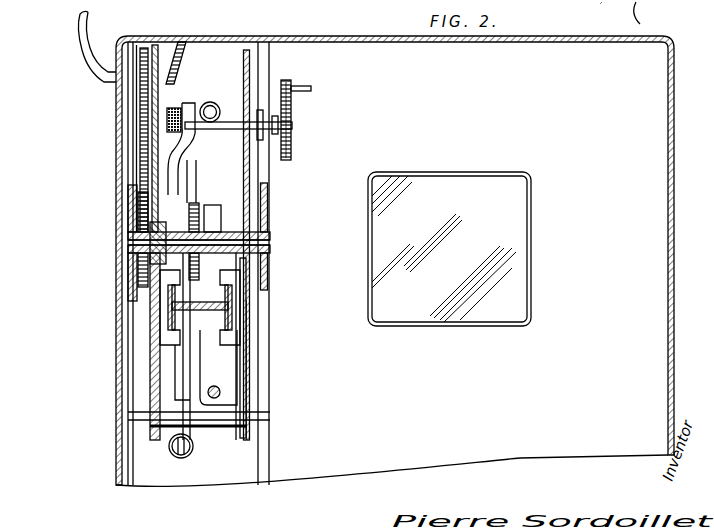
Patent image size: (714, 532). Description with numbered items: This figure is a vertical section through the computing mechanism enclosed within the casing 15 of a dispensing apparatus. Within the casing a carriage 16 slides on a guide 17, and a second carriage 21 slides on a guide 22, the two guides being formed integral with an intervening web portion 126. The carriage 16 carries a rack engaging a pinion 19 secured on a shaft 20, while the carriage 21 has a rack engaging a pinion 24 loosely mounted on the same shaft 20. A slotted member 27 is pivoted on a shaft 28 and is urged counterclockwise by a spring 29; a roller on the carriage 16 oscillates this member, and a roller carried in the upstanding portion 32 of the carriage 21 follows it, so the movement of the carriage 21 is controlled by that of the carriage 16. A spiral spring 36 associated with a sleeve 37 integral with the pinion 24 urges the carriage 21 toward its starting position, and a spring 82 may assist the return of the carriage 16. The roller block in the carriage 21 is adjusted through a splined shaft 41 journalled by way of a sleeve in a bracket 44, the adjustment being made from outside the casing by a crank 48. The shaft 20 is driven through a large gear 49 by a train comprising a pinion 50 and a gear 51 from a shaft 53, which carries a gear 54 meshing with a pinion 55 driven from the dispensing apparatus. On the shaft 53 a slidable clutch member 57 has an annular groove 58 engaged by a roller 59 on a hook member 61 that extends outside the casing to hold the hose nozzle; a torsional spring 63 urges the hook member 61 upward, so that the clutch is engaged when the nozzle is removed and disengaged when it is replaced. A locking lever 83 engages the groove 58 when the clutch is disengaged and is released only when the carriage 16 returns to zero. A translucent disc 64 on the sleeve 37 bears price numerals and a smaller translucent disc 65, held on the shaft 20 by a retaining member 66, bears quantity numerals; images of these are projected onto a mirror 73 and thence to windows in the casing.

The casing 15 is at (381, 44).
The carriage 16 is at (160, 341).
The guide 17 is at (166, 318).
The pinion 19 is at (152, 264).
The shaft 20 is at (118, 247).
The second carriage 21 is at (232, 333).
The guide 22 is at (233, 314).
The pinion 24 is at (246, 272).
The slotted member 27 is at (190, 372).
The shaft 28 is at (142, 420).
The spring 29 is at (170, 456).
The upstanding portion 32 is at (209, 218).
The spiral spring 36 is at (202, 200).
The sleeve 37 is at (251, 208).
The splined shaft 41 is at (214, 400).
The bracket 44 is at (592, 8).
The crank 48 is at (647, 13).
The large gear 49 is at (155, 62).
The pinion 50 is at (144, 143).
The gear 51 is at (140, 172).
The shaft 53 is at (292, 125).
The gear 54 is at (291, 148).
The pinion 55 is at (290, 88).
The slidable clutch member 57 is at (186, 117).
The annular groove 58 is at (170, 105).
The roller 59 is at (138, 106).
The hook member 61 is at (136, 60).
The torsional spring 63 is at (170, 80).
The translucent disc 64 is at (250, 399).
The translucent disc 65 is at (260, 380).
The retaining member 66 is at (270, 218).
The mirror 73 is at (520, 280).
The spring 82 is at (128, 217).
The locking lever 83 is at (128, 194).
The web portion 126 is at (216, 340).